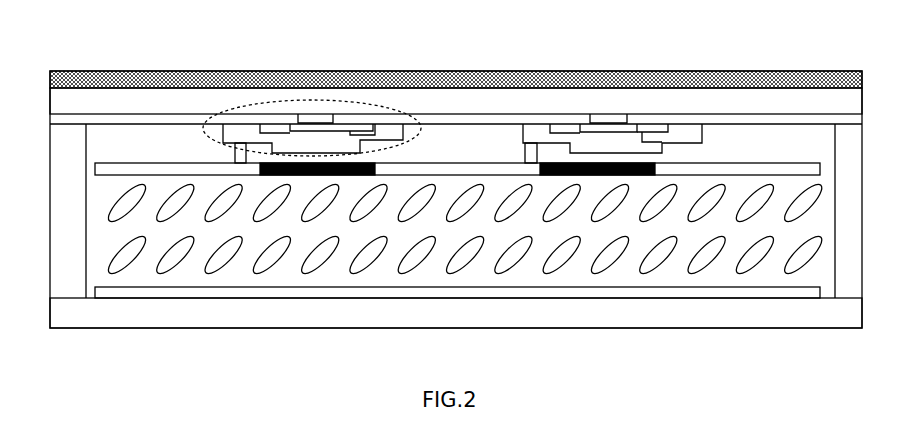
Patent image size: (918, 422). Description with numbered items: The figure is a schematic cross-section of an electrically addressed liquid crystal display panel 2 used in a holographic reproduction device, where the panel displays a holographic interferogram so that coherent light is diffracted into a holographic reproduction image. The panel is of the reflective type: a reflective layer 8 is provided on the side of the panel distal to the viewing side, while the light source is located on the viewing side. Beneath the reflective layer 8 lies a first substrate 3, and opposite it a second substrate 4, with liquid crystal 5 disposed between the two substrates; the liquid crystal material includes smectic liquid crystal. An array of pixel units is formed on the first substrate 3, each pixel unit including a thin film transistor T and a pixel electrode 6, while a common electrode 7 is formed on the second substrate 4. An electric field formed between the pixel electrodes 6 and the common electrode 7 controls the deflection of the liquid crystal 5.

The electrically addressed liquid crystal display panel 2 is at (803, 46).
The first substrate 3 is at (44, 106).
The second substrate 4 is at (40, 310).
The liquid crystal 5 is at (98, 212).
The pixel electrode 6 is at (98, 169).
The common electrode 7 is at (128, 299).
The reflective layer 8 is at (76, 69).
The thin film transistor T is at (342, 101).